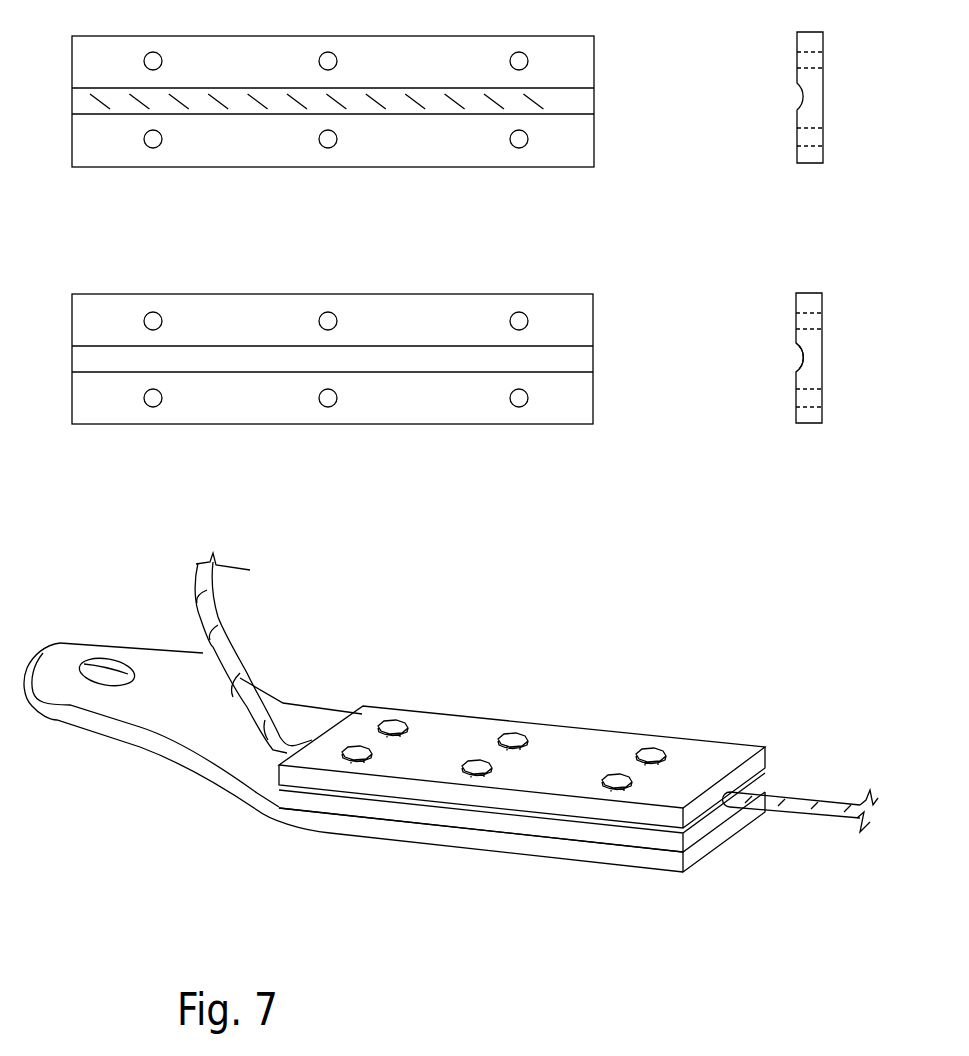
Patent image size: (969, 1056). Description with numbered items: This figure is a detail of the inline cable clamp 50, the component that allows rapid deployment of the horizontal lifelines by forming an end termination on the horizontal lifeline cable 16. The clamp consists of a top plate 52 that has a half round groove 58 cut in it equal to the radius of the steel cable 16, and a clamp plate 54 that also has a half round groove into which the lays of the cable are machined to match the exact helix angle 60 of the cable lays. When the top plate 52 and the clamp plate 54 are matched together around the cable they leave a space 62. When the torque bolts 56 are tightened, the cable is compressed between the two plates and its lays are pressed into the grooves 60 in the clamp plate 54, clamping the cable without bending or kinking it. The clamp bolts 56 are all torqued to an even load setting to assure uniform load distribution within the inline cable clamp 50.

The horizontal lifeline cable 16 is at (847, 800).
The inline cable clamp 50 is at (565, 727).
The top plate 52 is at (565, 424).
The clamp plate 54 is at (598, 68).
The torque bolts 56 is at (397, 708).
The half round groove 58 is at (797, 356).
The helix angle 60 is at (388, 98).
The space 62 is at (190, 580).